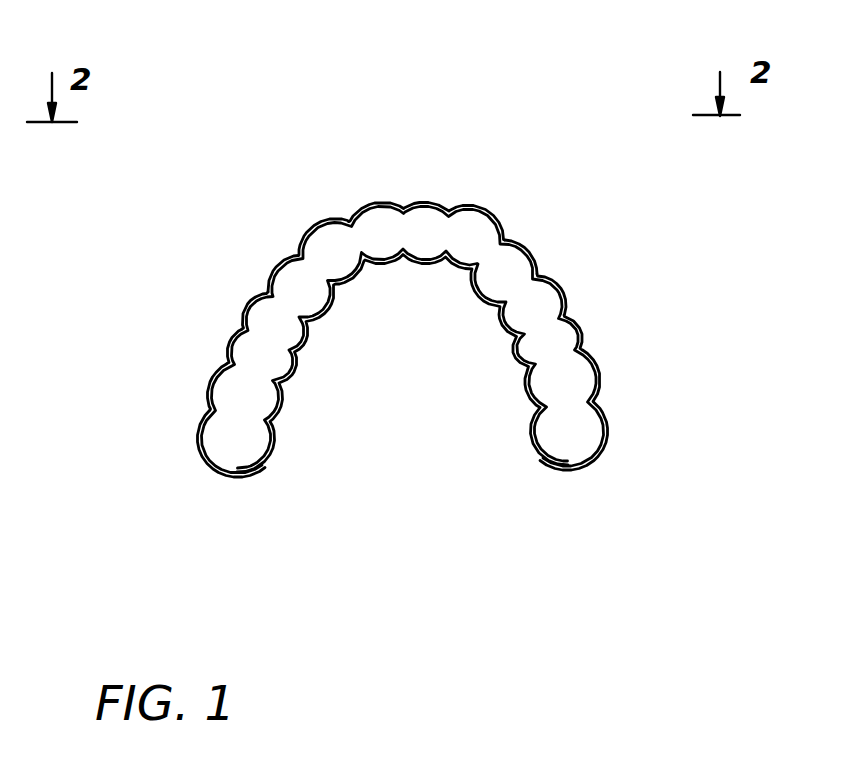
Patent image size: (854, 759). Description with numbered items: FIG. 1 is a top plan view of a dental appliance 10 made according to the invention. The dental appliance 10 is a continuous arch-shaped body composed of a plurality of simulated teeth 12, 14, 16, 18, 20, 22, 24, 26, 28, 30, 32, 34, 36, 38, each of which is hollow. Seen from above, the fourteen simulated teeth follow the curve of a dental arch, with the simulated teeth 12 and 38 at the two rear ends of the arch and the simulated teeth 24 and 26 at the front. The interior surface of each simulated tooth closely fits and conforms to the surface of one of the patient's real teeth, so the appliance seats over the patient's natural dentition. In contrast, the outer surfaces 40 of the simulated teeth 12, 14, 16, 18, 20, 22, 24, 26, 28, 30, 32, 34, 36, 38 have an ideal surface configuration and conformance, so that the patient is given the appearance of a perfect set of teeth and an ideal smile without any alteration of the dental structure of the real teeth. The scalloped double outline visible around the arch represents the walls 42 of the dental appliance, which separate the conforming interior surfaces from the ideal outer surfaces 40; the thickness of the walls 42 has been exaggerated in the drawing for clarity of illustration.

The dental appliance 10 is at (435, 96).
The simulated tooth 12 is at (200, 447).
The simulated tooth 14 is at (205, 393).
The simulated tooth 16 is at (220, 330).
The simulated tooth 18 is at (253, 290).
The simulated tooth 20 is at (278, 257).
The simulated tooth 22 is at (317, 227).
The simulated tooth 24 is at (368, 200).
The simulated tooth 26 is at (428, 200).
The simulated tooth 28 is at (490, 205).
The simulated tooth 30 is at (530, 250).
The simulated tooth 32 is at (567, 288).
The simulated tooth 34 is at (587, 335).
The simulated tooth 36 is at (600, 380).
The simulated tooth 38 is at (610, 432).
The outer surfaces 40 is at (213, 363).
The walls 42 is at (273, 447).